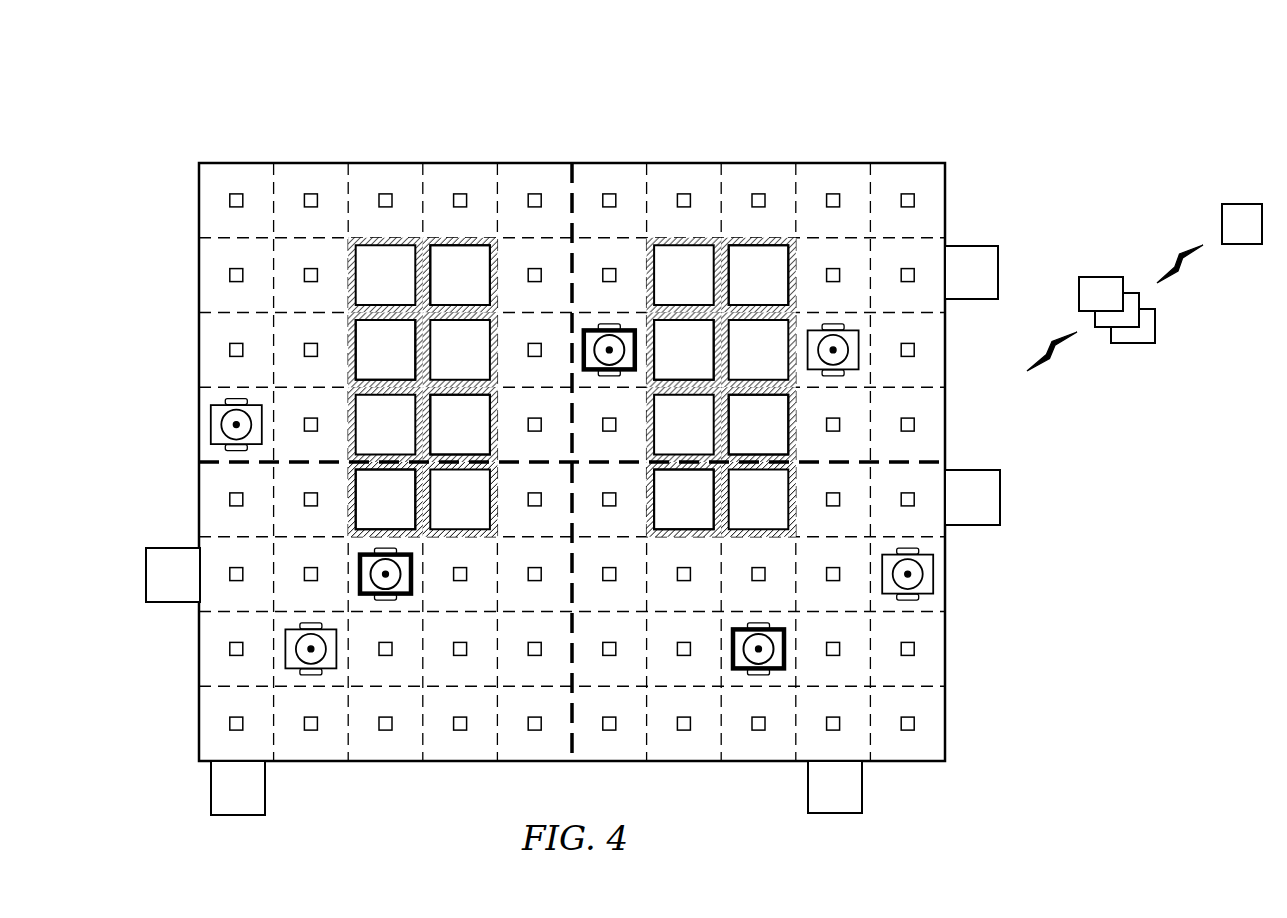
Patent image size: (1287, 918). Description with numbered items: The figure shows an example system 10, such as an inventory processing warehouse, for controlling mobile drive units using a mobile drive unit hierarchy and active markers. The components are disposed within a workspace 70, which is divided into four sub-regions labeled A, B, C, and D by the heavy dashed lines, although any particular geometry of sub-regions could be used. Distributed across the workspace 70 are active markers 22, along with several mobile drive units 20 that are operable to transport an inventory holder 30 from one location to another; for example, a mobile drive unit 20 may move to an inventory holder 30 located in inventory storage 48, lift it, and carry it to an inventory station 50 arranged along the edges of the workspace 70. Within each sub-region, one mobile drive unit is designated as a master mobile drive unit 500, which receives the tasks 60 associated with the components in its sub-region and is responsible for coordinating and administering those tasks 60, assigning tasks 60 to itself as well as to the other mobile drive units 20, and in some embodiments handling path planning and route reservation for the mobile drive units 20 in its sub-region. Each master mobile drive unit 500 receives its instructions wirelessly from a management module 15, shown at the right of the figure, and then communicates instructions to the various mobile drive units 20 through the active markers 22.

The system 10 is at (242, 92).
The management module 15 is at (1245, 204).
The mobile drive unit 20 is at (211, 425).
The active marker 22 is at (311, 193).
The inventory holder 30 is at (446, 286).
The inventory storage 48 is at (367, 216).
The inventory station 50 is at (970, 246).
The tasks 60 is at (1135, 343).
The workspace 70 is at (667, 185).
The master mobile drive unit 500 is at (584, 345).